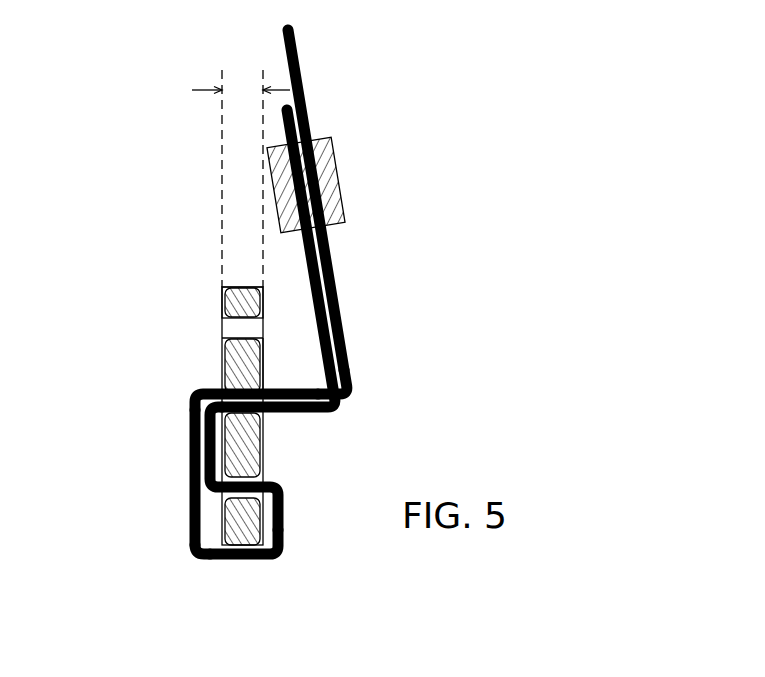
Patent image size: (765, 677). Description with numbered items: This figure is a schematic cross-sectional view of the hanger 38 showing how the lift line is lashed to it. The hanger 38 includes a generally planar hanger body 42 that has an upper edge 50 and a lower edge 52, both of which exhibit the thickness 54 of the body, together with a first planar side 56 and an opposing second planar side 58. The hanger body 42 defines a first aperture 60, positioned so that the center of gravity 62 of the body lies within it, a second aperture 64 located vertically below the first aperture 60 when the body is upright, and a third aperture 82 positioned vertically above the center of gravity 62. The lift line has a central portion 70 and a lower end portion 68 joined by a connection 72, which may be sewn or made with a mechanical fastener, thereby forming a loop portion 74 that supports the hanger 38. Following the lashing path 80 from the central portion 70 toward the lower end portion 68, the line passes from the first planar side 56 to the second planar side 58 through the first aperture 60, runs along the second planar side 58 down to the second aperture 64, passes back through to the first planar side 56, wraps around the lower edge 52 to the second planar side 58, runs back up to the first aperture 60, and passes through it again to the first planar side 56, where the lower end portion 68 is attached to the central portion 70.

The hanger 38 is at (190, 328).
The hanger body 42 is at (222, 522).
The upper edge 50 is at (242, 287).
The lower edge 52 is at (258, 562).
The thickness 54 is at (193, 92).
The first planar side 56 is at (264, 365).
The second planar side 58 is at (218, 358).
The first aperture 60 is at (220, 388).
The center of gravity 62 is at (220, 370).
The second aperture 64 is at (222, 490).
The lower end portion 68 is at (305, 270).
The central portion 70 is at (300, 70).
The connection 72 is at (357, 175).
The loop portion 74 is at (207, 562).
The lashing path 80 is at (336, 405).
The third aperture 82 is at (220, 325).